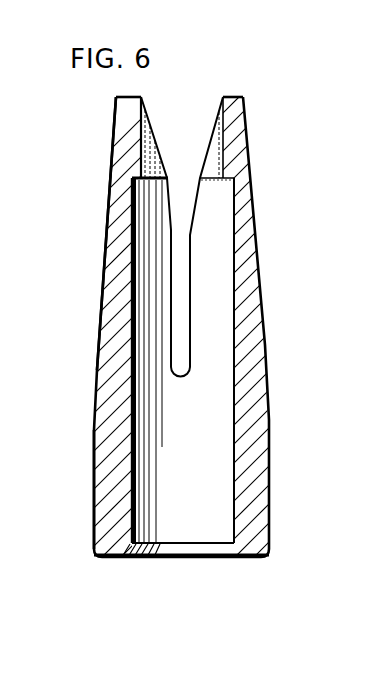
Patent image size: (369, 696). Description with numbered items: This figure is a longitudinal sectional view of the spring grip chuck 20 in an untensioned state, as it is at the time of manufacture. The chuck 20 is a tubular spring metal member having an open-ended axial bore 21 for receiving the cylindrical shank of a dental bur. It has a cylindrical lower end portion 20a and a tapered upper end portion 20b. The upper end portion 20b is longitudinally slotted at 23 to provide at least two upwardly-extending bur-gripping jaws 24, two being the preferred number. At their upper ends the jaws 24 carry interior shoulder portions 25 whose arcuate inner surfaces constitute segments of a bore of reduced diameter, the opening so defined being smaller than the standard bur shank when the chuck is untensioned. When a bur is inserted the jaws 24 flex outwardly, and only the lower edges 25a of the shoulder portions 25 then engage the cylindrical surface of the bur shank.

The spring grip chuck 20 is at (100, 306).
The cylindrical lower end portion 20a is at (95, 486).
The tapered upper end portion 20b is at (109, 204).
The axial bore 21 is at (233, 403).
The longitudinal slot 23 is at (189, 276).
The bur-gripping jaws 24 is at (115, 113).
The interior shoulder portions 25 is at (224, 141).
The lower edges of shoulder portions 25a is at (216, 182).